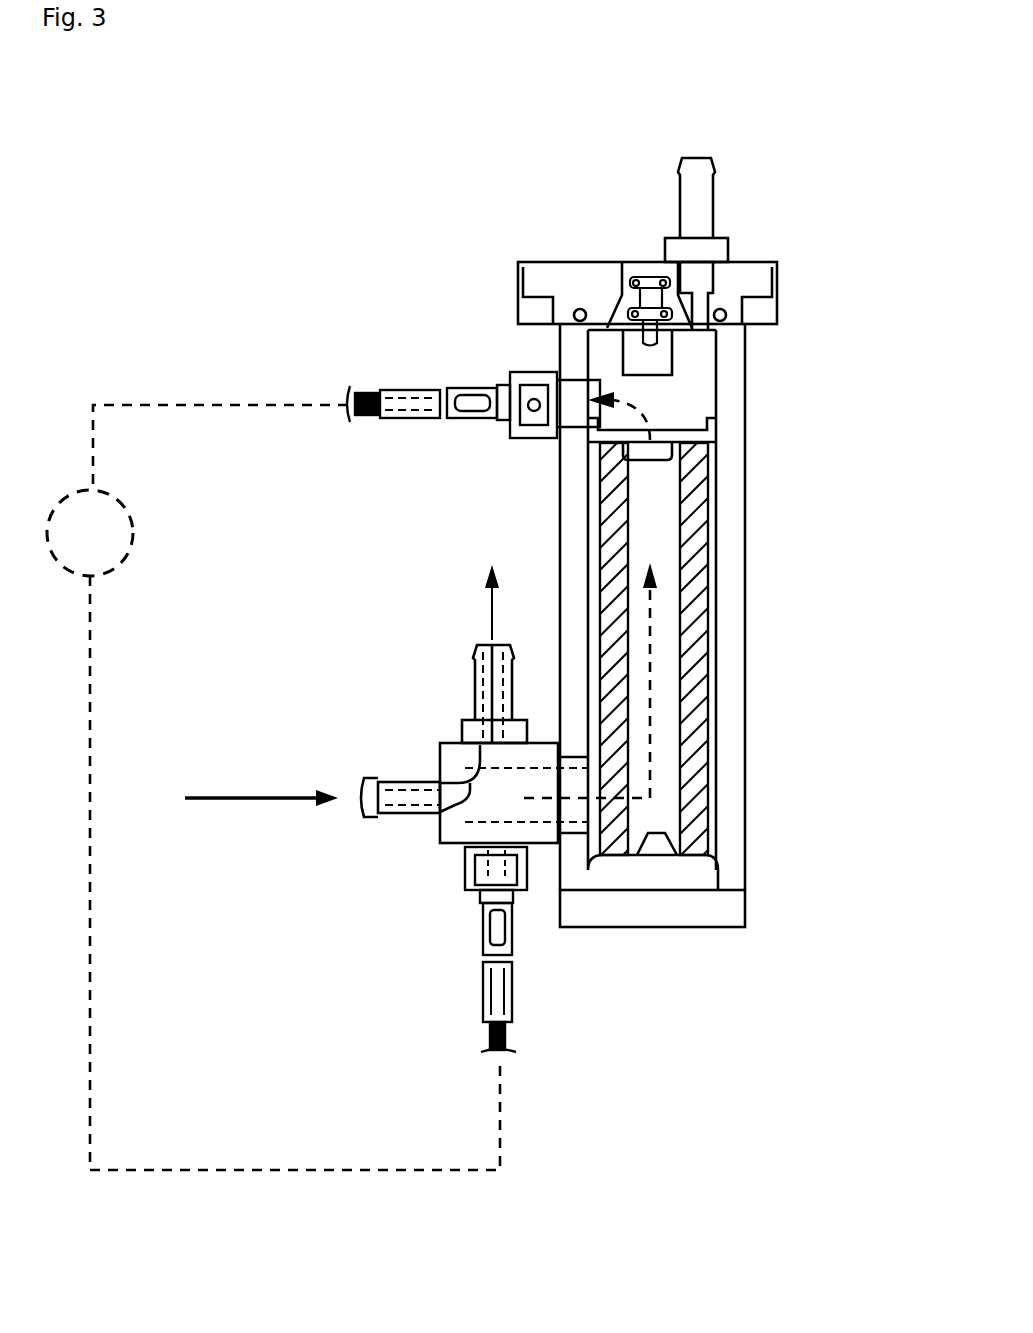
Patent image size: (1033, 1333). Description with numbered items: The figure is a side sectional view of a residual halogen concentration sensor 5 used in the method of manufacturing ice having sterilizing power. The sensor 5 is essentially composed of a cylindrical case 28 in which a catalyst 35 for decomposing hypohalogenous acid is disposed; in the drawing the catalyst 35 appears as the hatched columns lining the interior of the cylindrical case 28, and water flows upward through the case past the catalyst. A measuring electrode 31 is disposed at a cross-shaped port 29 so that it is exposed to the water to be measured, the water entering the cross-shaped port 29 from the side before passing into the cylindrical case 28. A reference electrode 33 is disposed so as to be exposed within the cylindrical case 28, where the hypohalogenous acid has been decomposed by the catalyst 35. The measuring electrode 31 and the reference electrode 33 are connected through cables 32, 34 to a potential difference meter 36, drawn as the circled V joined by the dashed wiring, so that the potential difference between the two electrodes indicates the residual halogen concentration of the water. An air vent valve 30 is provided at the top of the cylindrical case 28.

The residual halogen concentration sensor 5 is at (432, 257).
The cylindrical case 28 is at (730, 605).
The cross-shaped port 29 is at (452, 757).
The air vent valve 30 is at (645, 277).
The measuring electrode 31 is at (470, 843).
The cable 32 is at (490, 1030).
The reference electrode 33 is at (532, 437).
The cable 34 is at (360, 388).
The catalyst 35 is at (703, 733).
The potential difference meter 36 is at (128, 515).